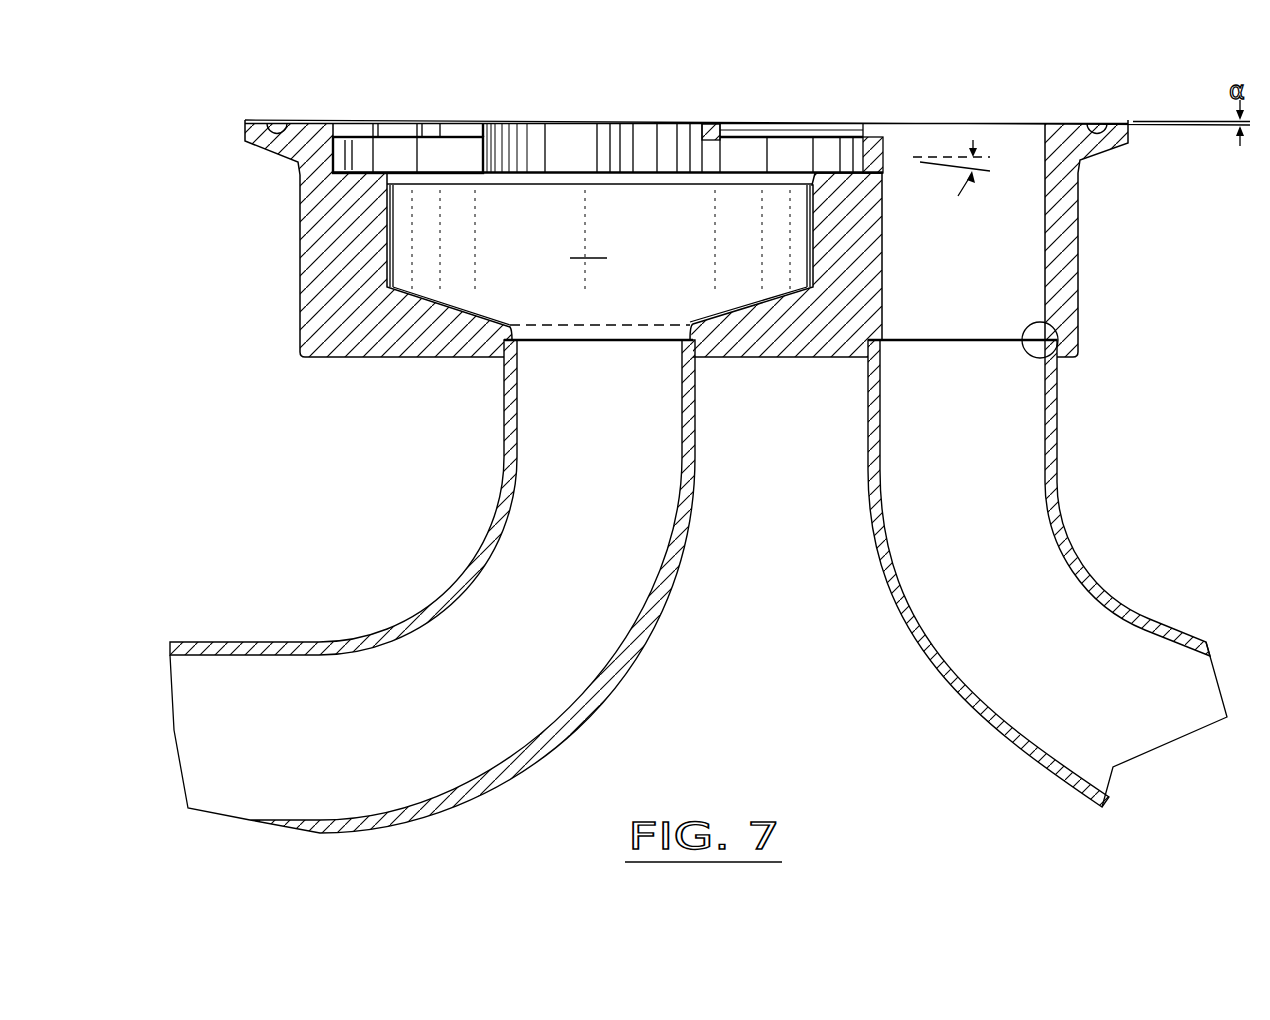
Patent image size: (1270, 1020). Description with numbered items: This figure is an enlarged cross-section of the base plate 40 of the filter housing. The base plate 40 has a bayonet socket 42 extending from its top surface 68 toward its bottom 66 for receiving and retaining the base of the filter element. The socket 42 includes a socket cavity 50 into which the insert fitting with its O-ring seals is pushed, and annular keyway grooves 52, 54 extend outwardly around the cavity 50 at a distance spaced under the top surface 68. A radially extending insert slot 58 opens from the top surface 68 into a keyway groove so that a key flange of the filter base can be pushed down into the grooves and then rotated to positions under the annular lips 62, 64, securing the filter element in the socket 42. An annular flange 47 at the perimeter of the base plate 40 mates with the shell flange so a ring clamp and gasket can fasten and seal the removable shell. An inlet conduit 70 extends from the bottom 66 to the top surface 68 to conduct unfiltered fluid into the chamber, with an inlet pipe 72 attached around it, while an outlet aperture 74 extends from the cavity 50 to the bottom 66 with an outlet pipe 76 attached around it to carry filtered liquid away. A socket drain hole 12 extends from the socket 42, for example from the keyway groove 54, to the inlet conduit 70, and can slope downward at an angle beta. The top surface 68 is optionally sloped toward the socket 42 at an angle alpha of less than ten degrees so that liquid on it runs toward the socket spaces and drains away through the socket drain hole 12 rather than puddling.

The socket drain hole 12 is at (883, 155).
The base plate 40 is at (290, 250).
The socket 42 is at (562, 140).
The annular flange 47 is at (1128, 127).
The socket cavity 50 is at (390, 250).
The annular keyway groove 52 is at (470, 147).
The annular keyway groove 54 is at (735, 157).
The insert slot 58 is at (623, 147).
The annular lip 62 is at (388, 130).
The annular lip 64 is at (822, 132).
The bottom 66 is at (753, 358).
The top surface 68 is at (840, 153).
The inlet conduit 70 is at (1052, 367).
The inlet pipe 72 is at (1065, 513).
The outlet aperture 74 is at (527, 342).
The outlet pipe 76 is at (490, 550).